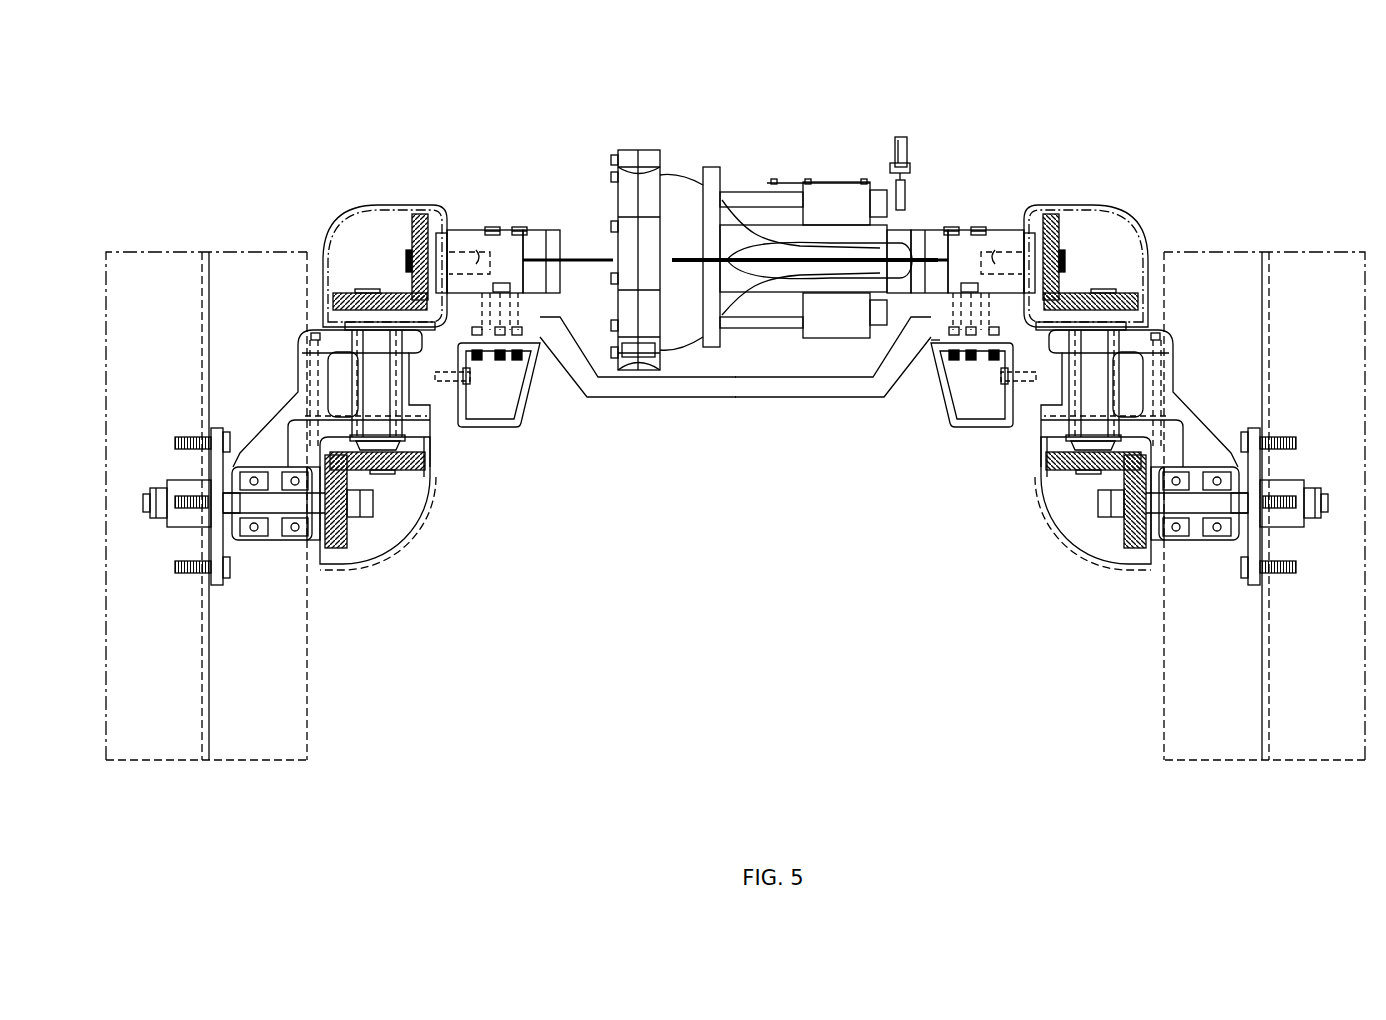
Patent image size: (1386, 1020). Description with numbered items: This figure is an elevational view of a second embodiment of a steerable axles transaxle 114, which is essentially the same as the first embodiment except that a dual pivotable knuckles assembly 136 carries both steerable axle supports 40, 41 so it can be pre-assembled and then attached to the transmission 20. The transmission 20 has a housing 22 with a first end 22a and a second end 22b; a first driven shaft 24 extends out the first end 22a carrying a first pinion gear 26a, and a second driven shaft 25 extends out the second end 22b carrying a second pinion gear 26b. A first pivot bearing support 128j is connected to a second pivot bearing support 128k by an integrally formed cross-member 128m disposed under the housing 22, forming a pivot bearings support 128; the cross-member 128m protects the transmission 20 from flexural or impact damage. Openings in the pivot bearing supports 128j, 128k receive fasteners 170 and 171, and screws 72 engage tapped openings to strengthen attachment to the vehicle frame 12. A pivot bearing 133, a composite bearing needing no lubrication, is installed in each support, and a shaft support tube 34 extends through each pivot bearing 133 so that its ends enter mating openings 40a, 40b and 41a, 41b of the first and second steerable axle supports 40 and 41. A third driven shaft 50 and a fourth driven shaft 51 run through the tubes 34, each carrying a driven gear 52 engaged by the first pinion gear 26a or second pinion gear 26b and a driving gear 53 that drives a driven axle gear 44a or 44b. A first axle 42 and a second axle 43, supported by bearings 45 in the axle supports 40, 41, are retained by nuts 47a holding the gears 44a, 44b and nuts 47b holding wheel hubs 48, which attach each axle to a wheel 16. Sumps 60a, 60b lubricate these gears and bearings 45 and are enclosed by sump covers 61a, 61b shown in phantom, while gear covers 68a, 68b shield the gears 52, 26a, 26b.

The transaxle 114 is at (182, 94).
The transmission 20 is at (690, 122).
The dual pivotable knuckles assembly 136 is at (792, 632).
The wheel 16 is at (207, 252).
The wheel hub 48 is at (185, 480).
The nut 47b is at (167, 520).
The first axle 42 is at (280, 530).
The second axle 43 is at (1191, 530).
The bearings 45 is at (262, 532).
The sump 60a is at (395, 518).
The sump 60b is at (1076, 518).
The sump cover 61a is at (434, 512).
The sump cover 61b is at (1037, 512).
The driving gear 53 is at (428, 465).
The driven axle gear 44a is at (340, 542).
The driven axle gear 44b is at (1131, 542).
The nut 47a is at (372, 522).
The shaft support tube 34 is at (410, 428).
The pivot bearing 133 is at (430, 433).
The third driven shaft 50 is at (395, 380).
The fourth driven shaft 51 is at (1076, 380).
The first steerable axle support 40 is at (292, 396).
The second steerable axle support 41 is at (1179, 396).
The mating opening 40a is at (356, 346).
The mating opening 41a is at (1115, 346).
The mating opening 40b is at (357, 420).
The mating opening 41b is at (1114, 420).
The first pivot bearing support 128j is at (340, 378).
The second pivot bearing support 128k is at (1131, 378).
The gear cover 68a is at (352, 218).
The gear cover 68b is at (1119, 218).
The first pinion gear 26a is at (422, 225).
The second pinion gear 26b is at (1049, 225).
The driven gear 52 is at (350, 293).
The first driven shaft 24 is at (462, 250).
The second driven shaft 25 is at (1009, 250).
The first end 22a is at (545, 228).
The second end 22b is at (927, 228).
The fasteners 170 is at (515, 227).
The fasteners 171 is at (503, 284).
The screws 72 is at (477, 382).
The pivot bearings support 128 is at (560, 397).
The cross-member 128m is at (737, 400).
The vehicle frame 12 is at (952, 428).
The housing 22 is at (697, 246).